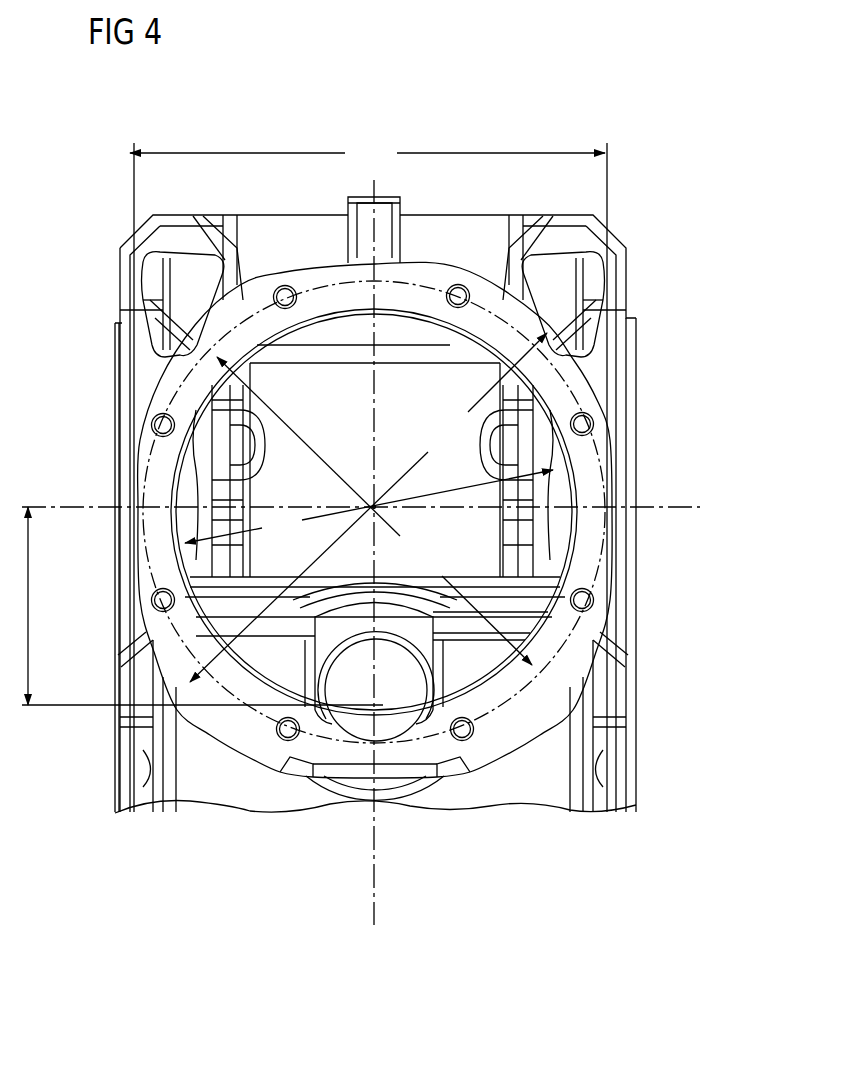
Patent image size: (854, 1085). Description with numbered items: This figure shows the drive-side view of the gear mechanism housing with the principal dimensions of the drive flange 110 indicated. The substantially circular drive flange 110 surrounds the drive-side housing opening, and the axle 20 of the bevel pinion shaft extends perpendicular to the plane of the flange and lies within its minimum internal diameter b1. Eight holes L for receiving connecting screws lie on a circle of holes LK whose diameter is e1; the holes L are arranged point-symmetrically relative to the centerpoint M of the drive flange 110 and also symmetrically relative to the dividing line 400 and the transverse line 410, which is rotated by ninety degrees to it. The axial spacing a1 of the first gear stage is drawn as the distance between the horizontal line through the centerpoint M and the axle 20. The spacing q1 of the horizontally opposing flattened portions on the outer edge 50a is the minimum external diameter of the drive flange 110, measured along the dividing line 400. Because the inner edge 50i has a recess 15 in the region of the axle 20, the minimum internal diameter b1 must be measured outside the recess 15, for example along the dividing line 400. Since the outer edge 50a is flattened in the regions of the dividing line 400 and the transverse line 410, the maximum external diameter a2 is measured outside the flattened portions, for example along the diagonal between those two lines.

The recess 15 is at (362, 714).
The axle 20 is at (379, 714).
The drive flange 110 is at (490, 729).
The dividing line 400 is at (690, 506).
The transverse line 410 is at (378, 914).
The outer edge 50a is at (606, 636).
The inner edge 50i is at (308, 328).
The holes L is at (595, 424).
The circle of holes LK is at (610, 600).
The centerpoint M is at (373, 506).
The spacing of the horizontally opposing flattened portions q1 is at (367, 154).
The axial spacing of the first gear stage a1 is at (197, 606).
The maximum external diameter a2 is at (368, 507).
The minimum internal diameter b1 is at (369, 506).
The diameter of the circle of holes e1 is at (374, 511).